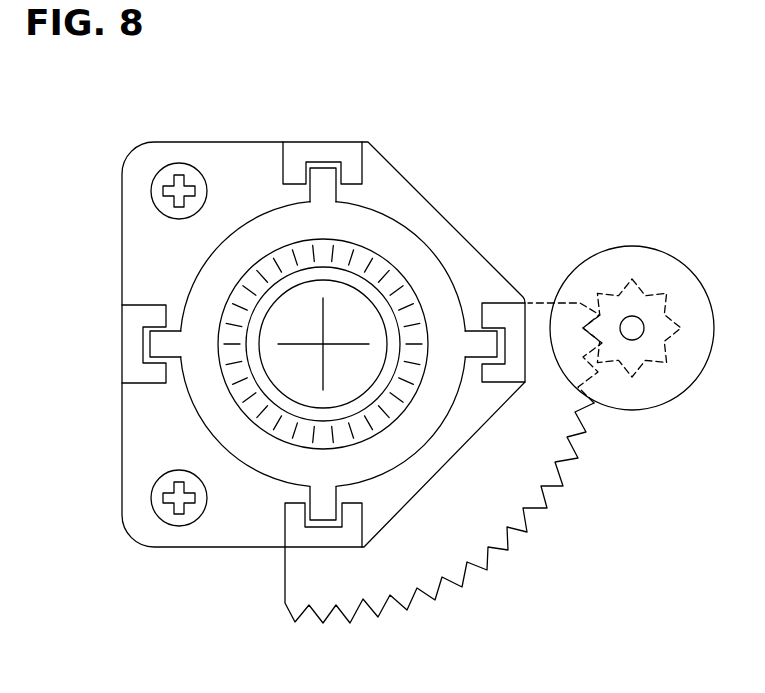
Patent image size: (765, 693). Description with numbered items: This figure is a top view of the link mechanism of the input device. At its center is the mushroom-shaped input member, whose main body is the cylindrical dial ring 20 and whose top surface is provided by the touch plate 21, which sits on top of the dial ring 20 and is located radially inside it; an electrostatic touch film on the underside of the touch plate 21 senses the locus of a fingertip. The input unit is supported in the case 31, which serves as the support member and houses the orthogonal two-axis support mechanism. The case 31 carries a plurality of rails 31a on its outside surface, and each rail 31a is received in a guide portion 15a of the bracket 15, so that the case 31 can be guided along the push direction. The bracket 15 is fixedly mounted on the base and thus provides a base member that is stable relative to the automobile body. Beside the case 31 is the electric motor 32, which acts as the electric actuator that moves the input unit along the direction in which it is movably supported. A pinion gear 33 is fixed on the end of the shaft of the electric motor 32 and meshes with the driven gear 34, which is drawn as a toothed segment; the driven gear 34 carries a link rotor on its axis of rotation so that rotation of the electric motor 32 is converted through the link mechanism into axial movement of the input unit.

The bracket 15 is at (198, 142).
The guide portion 15a is at (283, 160).
The dial ring 20 is at (243, 287).
The touch plate 21 is at (287, 377).
The case 31 is at (323, 303).
The rail 31a is at (323, 180).
The electric motor 32 is at (632, 245).
The pinion gear 33 is at (662, 293).
The driven gear 34 is at (510, 547).